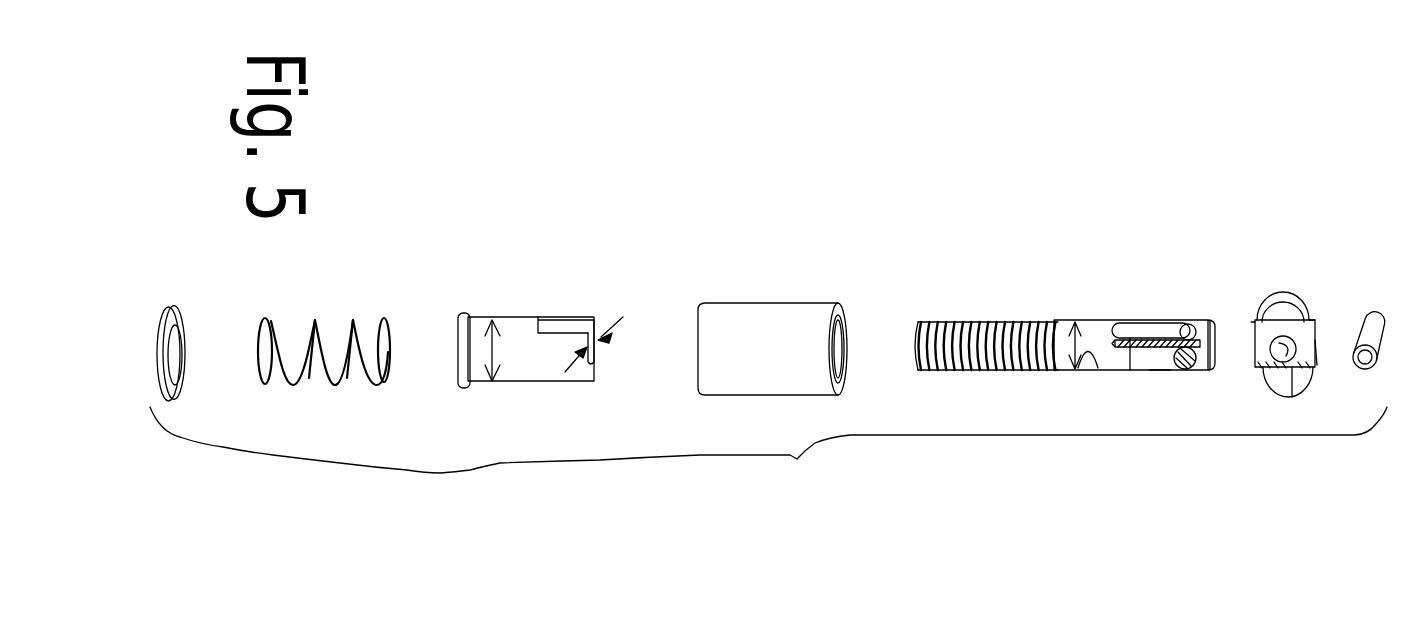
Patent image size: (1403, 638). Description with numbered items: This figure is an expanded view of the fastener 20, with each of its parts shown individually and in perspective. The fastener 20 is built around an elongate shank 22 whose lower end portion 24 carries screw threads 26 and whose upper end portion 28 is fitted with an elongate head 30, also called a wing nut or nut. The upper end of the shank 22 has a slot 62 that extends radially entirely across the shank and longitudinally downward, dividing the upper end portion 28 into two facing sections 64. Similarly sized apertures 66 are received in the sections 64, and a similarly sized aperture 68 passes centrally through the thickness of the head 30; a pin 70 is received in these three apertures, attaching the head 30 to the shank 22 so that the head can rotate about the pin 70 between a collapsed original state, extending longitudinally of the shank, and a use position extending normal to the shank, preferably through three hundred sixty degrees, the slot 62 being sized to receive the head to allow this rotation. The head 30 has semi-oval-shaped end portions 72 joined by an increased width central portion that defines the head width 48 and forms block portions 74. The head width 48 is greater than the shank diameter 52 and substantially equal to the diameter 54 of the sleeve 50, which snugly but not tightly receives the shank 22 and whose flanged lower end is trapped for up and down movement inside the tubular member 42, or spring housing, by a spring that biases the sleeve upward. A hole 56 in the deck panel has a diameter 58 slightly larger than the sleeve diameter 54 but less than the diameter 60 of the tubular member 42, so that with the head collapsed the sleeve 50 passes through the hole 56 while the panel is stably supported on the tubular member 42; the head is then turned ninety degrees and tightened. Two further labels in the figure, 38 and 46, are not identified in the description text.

The fastener 20 is at (1315, 263).
The elongate shank 22 is at (1093, 320).
The lower end portion 24 is at (990, 318).
The screw threads 26 is at (913, 347).
The upper end portion 28 is at (597, 367).
The head 30 is at (1260, 298).
The shaft portion 38 is at (1130, 370).
The tubular member 42 is at (761, 310).
The washer 46 is at (166, 302).
The head width 48 is at (460, 390).
The sleeve 50 is at (510, 321).
The shank diameter 52 is at (567, 320).
The sleeve diameter 54 is at (493, 343).
The hole 56 is at (610, 333).
The hole diameter 58 is at (358, 316).
The tubular member diameter 60 is at (846, 383).
The slot 62 is at (1137, 323).
The facing sections 64 is at (1163, 318).
The apertures 66 is at (1184, 320).
The aperture 68 is at (1317, 365).
The pin 70 is at (1358, 328).
The semi-oval-shaped end portions 72 is at (1096, 370).
The block portions 74 is at (1158, 368).